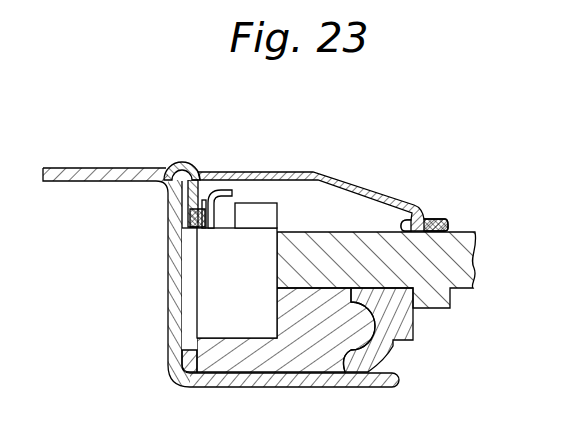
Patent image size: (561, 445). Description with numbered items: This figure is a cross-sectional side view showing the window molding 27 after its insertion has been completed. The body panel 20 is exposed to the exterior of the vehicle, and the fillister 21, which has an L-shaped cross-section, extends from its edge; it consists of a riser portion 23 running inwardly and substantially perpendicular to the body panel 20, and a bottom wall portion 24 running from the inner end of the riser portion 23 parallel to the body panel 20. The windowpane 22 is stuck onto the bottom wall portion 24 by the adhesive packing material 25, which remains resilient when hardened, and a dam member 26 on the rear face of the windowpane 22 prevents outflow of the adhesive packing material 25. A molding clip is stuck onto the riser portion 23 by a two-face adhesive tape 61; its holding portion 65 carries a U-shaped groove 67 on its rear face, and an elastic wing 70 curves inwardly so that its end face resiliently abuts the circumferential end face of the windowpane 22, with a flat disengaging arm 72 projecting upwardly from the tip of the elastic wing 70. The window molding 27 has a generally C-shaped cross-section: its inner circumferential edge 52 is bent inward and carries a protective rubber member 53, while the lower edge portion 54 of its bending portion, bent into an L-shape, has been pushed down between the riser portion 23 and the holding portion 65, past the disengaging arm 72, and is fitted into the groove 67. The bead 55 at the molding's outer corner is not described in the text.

The body panel 20 is at (70, 183).
The fillister 21 is at (220, 299).
The windowpane 22 is at (470, 292).
The riser portion 23 is at (173, 294).
The bottom wall portion 24 is at (297, 380).
The adhesive packing material 25 is at (322, 354).
The dam member 26 is at (388, 361).
The window molding 27 is at (318, 173).
The inner circumferential edge 52 is at (420, 209).
The rubber member 53 is at (432, 222).
The lower edge portion 54 is at (185, 226).
The bead 55 is at (186, 164).
The two-face adhesive tape 61 is at (187, 319).
The holding portion 65 is at (222, 195).
The groove 67 is at (204, 207).
The elastic wing 70 is at (208, 271).
The disengaging arm 72 is at (263, 215).